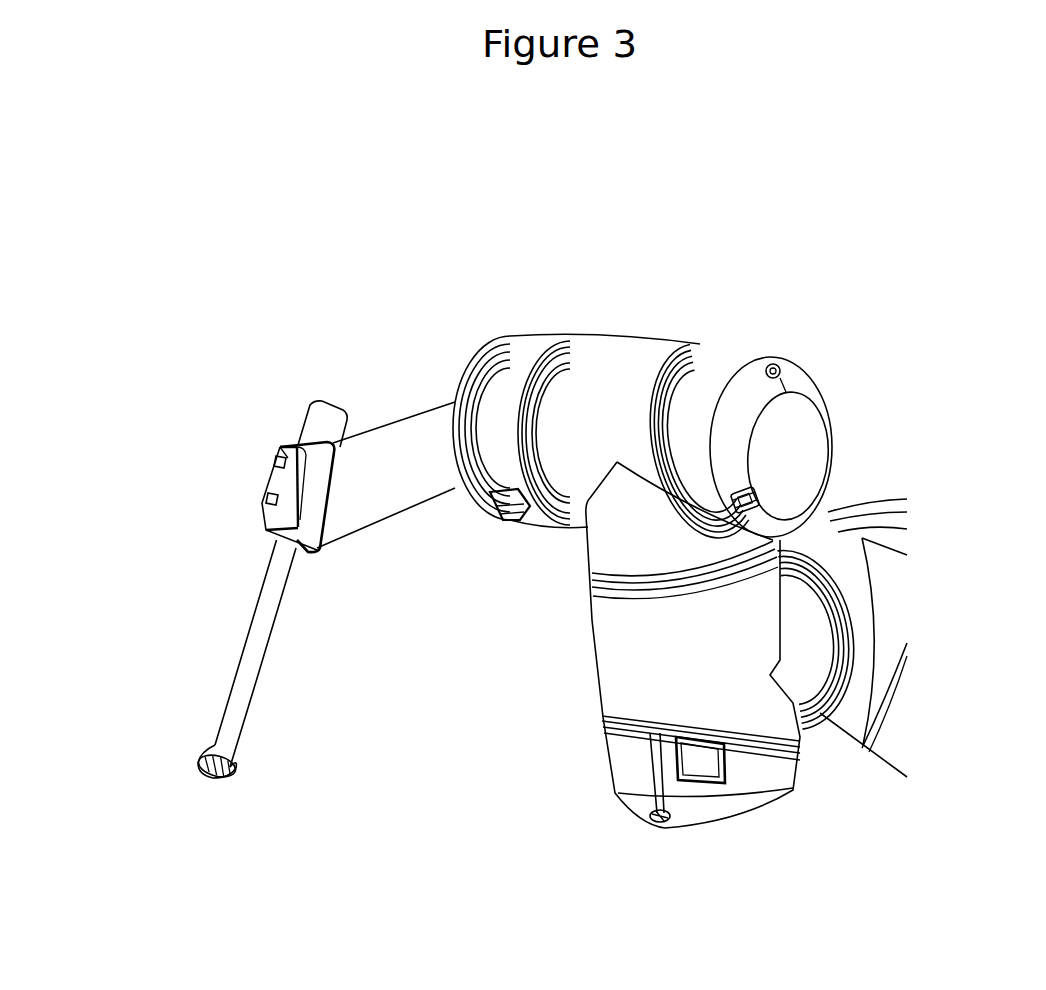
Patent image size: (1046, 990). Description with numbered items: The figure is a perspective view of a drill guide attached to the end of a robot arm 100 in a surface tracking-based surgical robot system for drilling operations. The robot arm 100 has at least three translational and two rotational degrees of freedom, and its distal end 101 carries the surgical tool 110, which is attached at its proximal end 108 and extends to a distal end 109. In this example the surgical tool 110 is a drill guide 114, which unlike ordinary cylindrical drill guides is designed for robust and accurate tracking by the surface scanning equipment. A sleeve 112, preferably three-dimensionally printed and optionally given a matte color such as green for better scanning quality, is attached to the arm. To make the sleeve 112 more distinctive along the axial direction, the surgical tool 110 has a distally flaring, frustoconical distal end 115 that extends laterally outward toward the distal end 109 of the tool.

The robot arm 100 is at (788, 360).
The distal end of the robot arm 101 is at (337, 540).
The proximal end 108 is at (308, 408).
The distal end 109 is at (237, 772).
The surgical tool 110 is at (275, 673).
The sleeve 112 is at (233, 677).
The drill guide 114 is at (262, 588).
The frustoconical distal end 115 is at (212, 743).